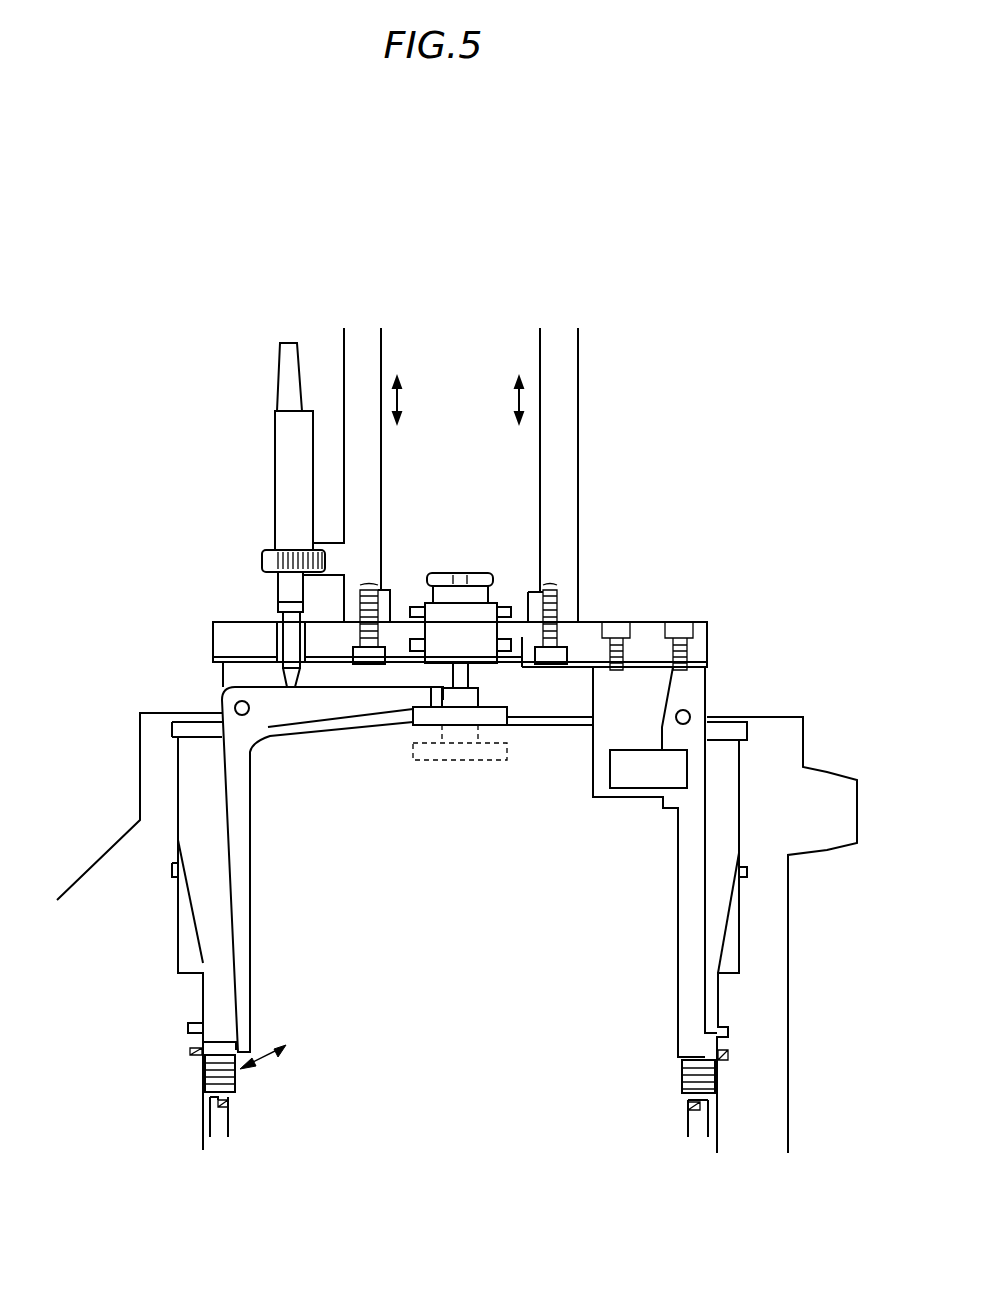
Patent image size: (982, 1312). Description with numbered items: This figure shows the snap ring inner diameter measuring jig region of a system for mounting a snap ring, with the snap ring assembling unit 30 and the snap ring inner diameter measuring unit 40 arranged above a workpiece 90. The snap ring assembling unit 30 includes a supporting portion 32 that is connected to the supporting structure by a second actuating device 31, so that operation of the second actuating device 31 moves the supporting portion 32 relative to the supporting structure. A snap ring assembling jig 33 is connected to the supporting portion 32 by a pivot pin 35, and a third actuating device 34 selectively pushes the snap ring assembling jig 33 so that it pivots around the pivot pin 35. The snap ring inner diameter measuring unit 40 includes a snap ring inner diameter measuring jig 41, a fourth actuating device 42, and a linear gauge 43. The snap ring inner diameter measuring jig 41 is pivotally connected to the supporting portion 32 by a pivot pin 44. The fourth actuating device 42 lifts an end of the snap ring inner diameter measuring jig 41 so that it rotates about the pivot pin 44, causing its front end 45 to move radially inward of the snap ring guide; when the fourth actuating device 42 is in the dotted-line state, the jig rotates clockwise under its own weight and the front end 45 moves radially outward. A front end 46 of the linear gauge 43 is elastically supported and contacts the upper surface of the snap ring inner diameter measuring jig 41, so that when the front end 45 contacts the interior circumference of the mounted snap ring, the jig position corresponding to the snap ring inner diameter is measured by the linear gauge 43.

The snap ring assembling unit 30 is at (588, 821).
The second actuating device 31 is at (383, 338).
The supporting portion 32 is at (650, 622).
The snap ring assembling jig 33 is at (693, 905).
The third actuating device 34 is at (642, 773).
The pivot pin 35 is at (690, 712).
The snap ring inner diameter measuring unit 40 is at (303, 773).
The snap ring inner diameter measuring jig 41 is at (240, 885).
The fourth actuating device 42 is at (453, 740).
The linear gauge 43 is at (288, 457).
The pivot pin 44 is at (235, 705).
The front end of the snap ring inner diameter measuring jig 45 is at (232, 1048).
The front end of the linear gauge 46 is at (282, 686).
The workpiece 90 is at (805, 735).